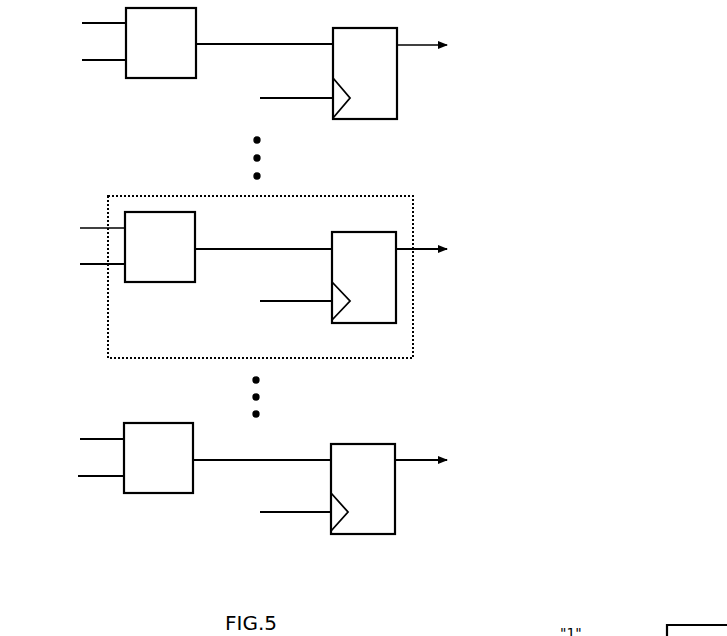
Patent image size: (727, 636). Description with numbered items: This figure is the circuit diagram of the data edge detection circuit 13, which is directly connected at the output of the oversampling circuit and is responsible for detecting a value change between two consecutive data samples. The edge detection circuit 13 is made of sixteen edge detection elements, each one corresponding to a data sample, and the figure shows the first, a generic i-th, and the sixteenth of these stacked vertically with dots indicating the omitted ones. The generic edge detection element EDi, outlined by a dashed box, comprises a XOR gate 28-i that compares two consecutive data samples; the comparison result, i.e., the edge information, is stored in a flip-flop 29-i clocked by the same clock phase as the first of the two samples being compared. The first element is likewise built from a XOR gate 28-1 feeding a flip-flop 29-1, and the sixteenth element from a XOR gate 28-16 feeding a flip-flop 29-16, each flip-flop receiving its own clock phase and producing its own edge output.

The data edge detection circuit 13 is at (584, 150).
The XOR gate 28-1 is at (160, 78).
The flip-flop 29-1 is at (378, 119).
The XOR gate 28-i is at (158, 282).
The flip-flop 29-i is at (385, 323).
The XOR gate 28-16 is at (157, 493).
The flip-flop 29-16 is at (376, 534).
The edge detection element EDi is at (413, 196).